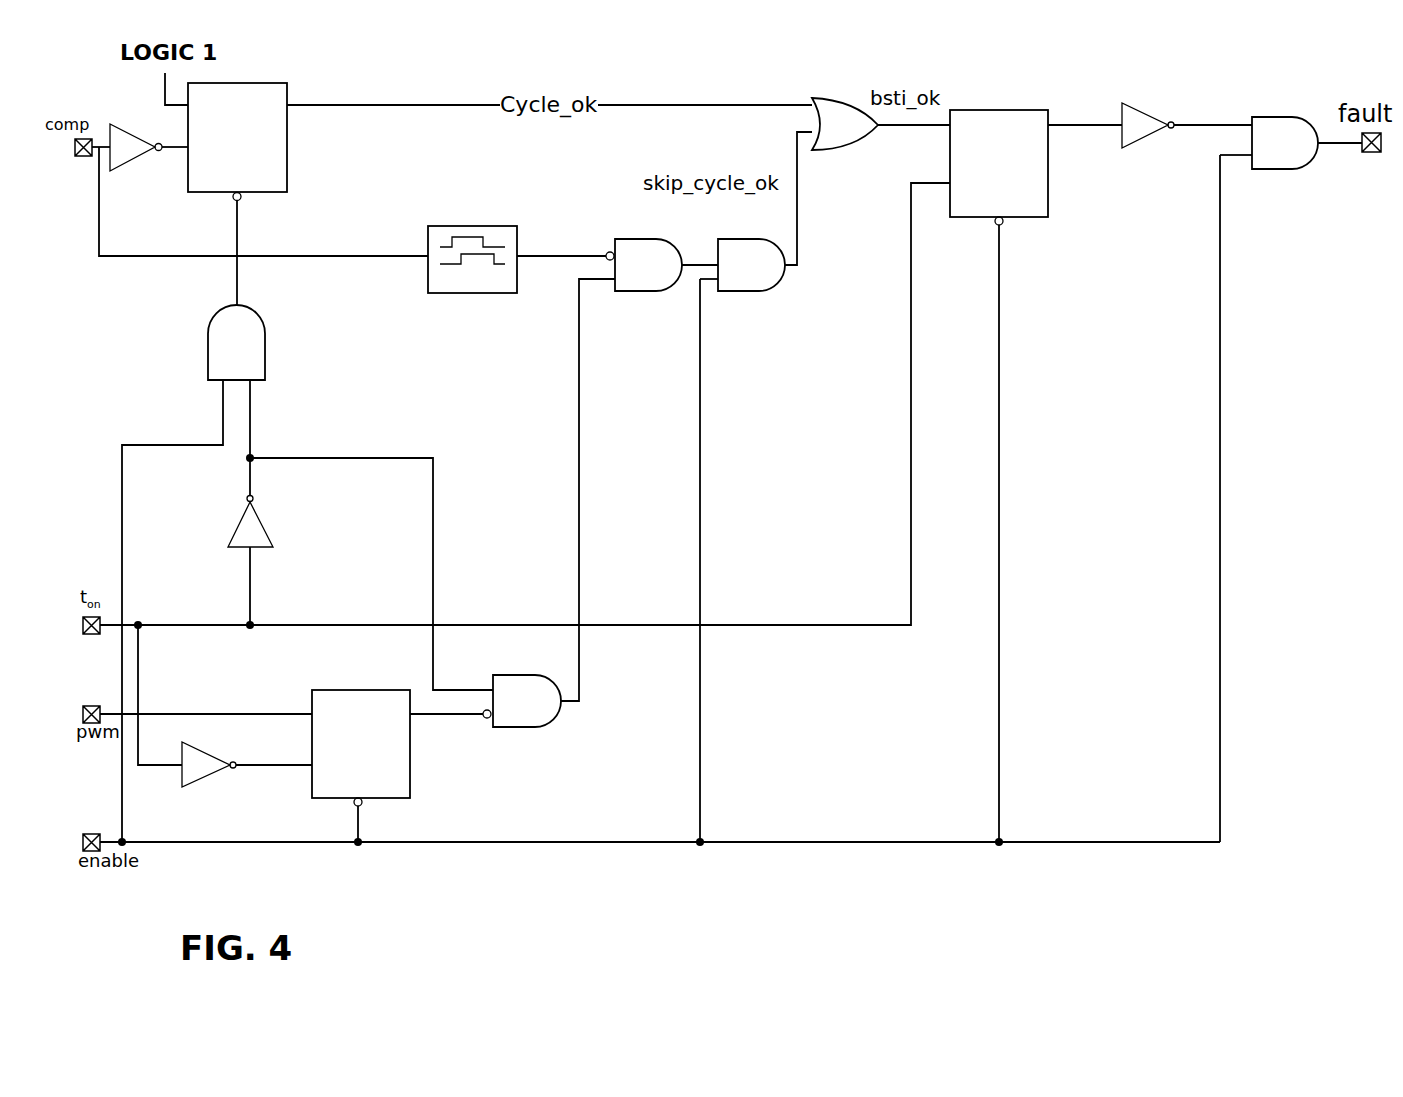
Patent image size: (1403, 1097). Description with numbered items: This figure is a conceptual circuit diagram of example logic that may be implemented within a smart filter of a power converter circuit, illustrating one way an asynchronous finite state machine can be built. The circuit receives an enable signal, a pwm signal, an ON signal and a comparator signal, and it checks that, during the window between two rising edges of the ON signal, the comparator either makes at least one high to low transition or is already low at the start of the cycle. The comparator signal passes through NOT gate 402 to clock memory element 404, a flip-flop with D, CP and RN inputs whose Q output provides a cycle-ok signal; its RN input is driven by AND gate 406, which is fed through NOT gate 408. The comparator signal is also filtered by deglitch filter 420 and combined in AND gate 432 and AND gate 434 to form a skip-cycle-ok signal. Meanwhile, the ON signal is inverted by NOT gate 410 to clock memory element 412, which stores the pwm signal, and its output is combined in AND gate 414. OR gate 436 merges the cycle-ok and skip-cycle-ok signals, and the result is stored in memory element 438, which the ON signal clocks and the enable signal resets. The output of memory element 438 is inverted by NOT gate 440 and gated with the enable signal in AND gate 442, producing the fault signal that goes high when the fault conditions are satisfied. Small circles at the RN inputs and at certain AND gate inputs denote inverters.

The NOT gate 402 is at (133, 158).
The memory element 404 is at (290, 152).
The AND gate 406 is at (268, 366).
The NOT gate 408 is at (265, 517).
The NOT gate 410 is at (208, 775).
The memory element 412 is at (412, 773).
The AND gate 414 is at (560, 718).
The deglitch filter 420 is at (473, 226).
The AND gate 432 is at (675, 287).
The AND gate 434 is at (778, 287).
The OR gate 436 is at (868, 143).
The memory element 438 is at (973, 218).
The NOT gate 440 is at (1132, 146).
The AND gate 442 is at (1305, 167).